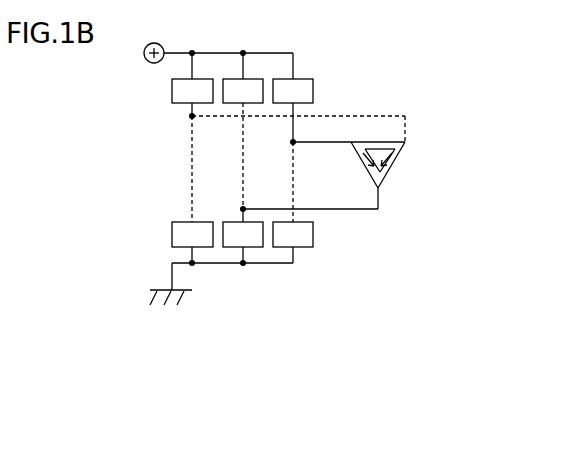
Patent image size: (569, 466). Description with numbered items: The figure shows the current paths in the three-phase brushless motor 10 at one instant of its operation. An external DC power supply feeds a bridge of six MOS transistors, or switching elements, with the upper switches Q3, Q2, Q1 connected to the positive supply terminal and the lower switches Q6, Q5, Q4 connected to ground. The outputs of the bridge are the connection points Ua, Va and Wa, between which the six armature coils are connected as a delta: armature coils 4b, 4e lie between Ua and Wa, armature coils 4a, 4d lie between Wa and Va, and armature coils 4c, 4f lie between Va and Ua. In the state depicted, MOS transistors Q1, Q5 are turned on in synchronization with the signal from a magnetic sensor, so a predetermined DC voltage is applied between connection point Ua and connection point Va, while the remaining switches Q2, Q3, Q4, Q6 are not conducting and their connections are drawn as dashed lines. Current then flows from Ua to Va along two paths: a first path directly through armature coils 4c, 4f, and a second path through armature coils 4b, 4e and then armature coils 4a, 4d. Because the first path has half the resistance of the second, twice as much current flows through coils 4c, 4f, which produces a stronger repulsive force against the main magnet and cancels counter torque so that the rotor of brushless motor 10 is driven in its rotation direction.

The brushless motor 10 is at (303, 152).
The armature coil 4a is at (420, 165).
The armature coil 4d is at (391, 164).
The armature coil 4b is at (378, 115).
The armature coil 4e is at (380, 142).
The armature coil 4c is at (356, 194).
The armature coil 4f is at (368, 168).
The MOS transistor Q1 is at (293, 91).
The MOS transistor Q2 is at (243, 91).
The MOS transistor Q3 is at (192, 91).
The MOS transistor Q4 is at (293, 234).
The MOS transistor Q5 is at (243, 234).
The MOS transistor Q6 is at (192, 234).